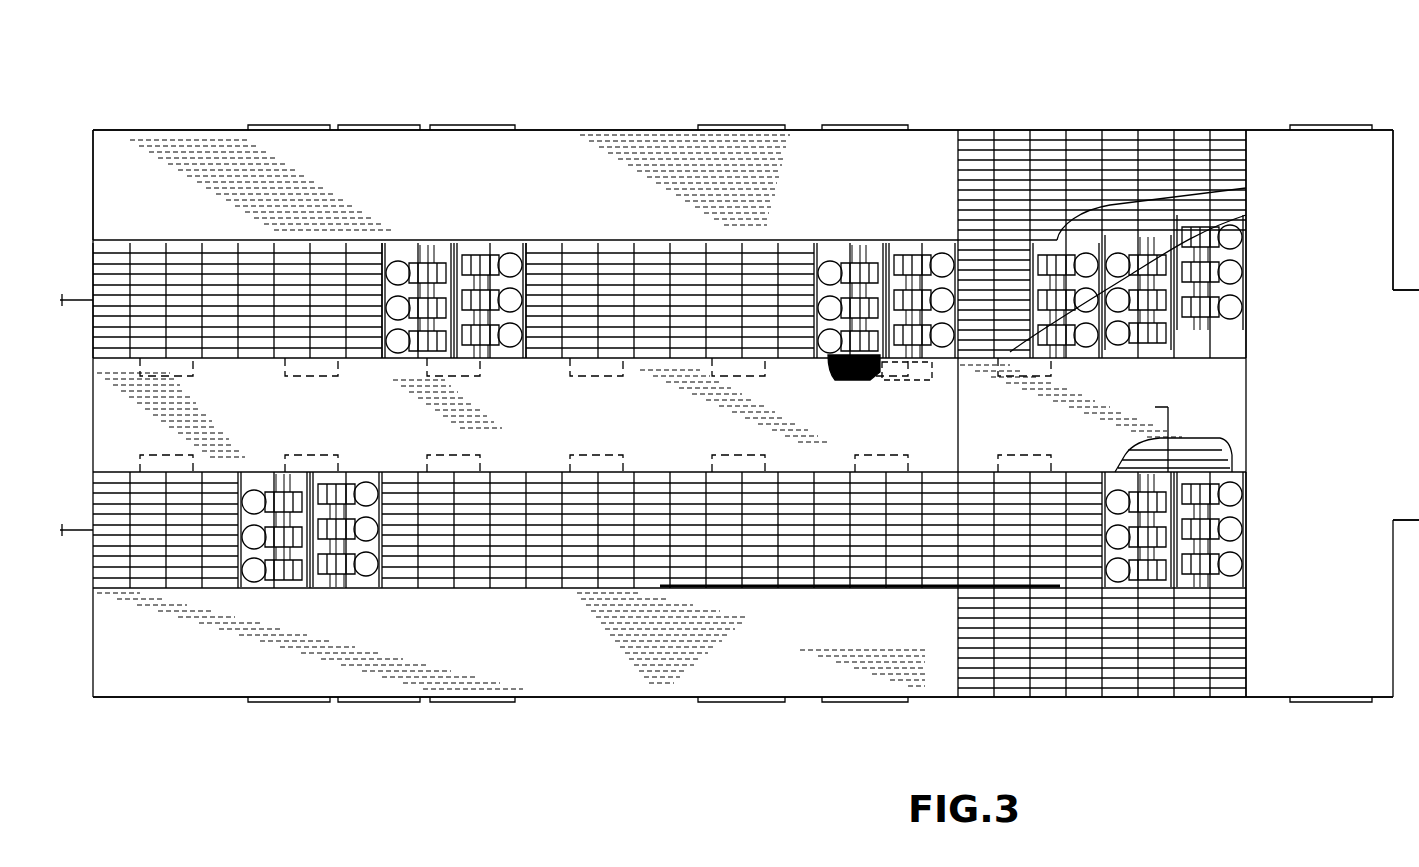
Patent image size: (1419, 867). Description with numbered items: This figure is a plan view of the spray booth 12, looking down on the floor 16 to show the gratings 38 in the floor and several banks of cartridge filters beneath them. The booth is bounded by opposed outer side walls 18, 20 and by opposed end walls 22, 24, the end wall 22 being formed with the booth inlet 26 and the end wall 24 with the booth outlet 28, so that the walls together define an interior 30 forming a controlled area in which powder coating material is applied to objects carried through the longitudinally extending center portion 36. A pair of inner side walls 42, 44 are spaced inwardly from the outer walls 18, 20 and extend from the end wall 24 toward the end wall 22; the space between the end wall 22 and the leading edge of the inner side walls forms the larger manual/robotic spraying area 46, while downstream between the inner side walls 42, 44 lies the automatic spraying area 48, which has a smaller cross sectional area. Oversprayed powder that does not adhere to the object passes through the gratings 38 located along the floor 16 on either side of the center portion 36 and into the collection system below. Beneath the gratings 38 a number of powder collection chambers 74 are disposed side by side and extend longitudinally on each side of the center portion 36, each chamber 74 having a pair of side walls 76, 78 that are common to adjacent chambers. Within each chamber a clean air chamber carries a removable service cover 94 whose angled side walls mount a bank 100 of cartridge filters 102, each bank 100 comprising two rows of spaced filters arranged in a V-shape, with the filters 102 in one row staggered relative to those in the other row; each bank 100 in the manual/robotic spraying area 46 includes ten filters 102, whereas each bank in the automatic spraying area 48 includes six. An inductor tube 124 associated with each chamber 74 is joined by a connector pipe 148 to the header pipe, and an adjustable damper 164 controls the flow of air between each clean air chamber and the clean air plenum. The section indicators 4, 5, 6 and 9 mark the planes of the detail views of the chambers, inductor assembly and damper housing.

The spray booth 12 is at (654, 744).
The floor 16 is at (556, 666).
The outer side wall 18 is at (597, 130).
The outer side wall 20 is at (678, 697).
The end wall 22 is at (1393, 135).
The end wall 24 is at (93, 152).
The booth inlet 26 is at (1415, 298).
The booth outlet 28 is at (82, 308).
The interior 30 is at (1118, 183).
The center portion 36 is at (1216, 403).
The gratings 38 is at (655, 255).
The inner side wall 42 is at (238, 243).
The inner side wall 44 is at (786, 588).
The manual/robotic spraying area 46 is at (1392, 226).
The automatic spraying area 48 is at (104, 72).
The powder collection chamber 74 is at (1248, 283).
The side wall 76 is at (378, 243).
The side wall 78 is at (530, 243).
The removable service cover 94 is at (866, 243).
The bank of cartridge filters 100 is at (850, 355).
The cartridge filter 102 is at (920, 243).
The inductor tube 124 is at (1082, 350).
The connector pipe 148 is at (985, 358).
The adjustable damper 164 is at (870, 395).
The section line 4 is at (860, 85).
The section line 5 is at (383, 268).
The section line 6 is at (518, 212).
The section line 9 is at (624, 332).